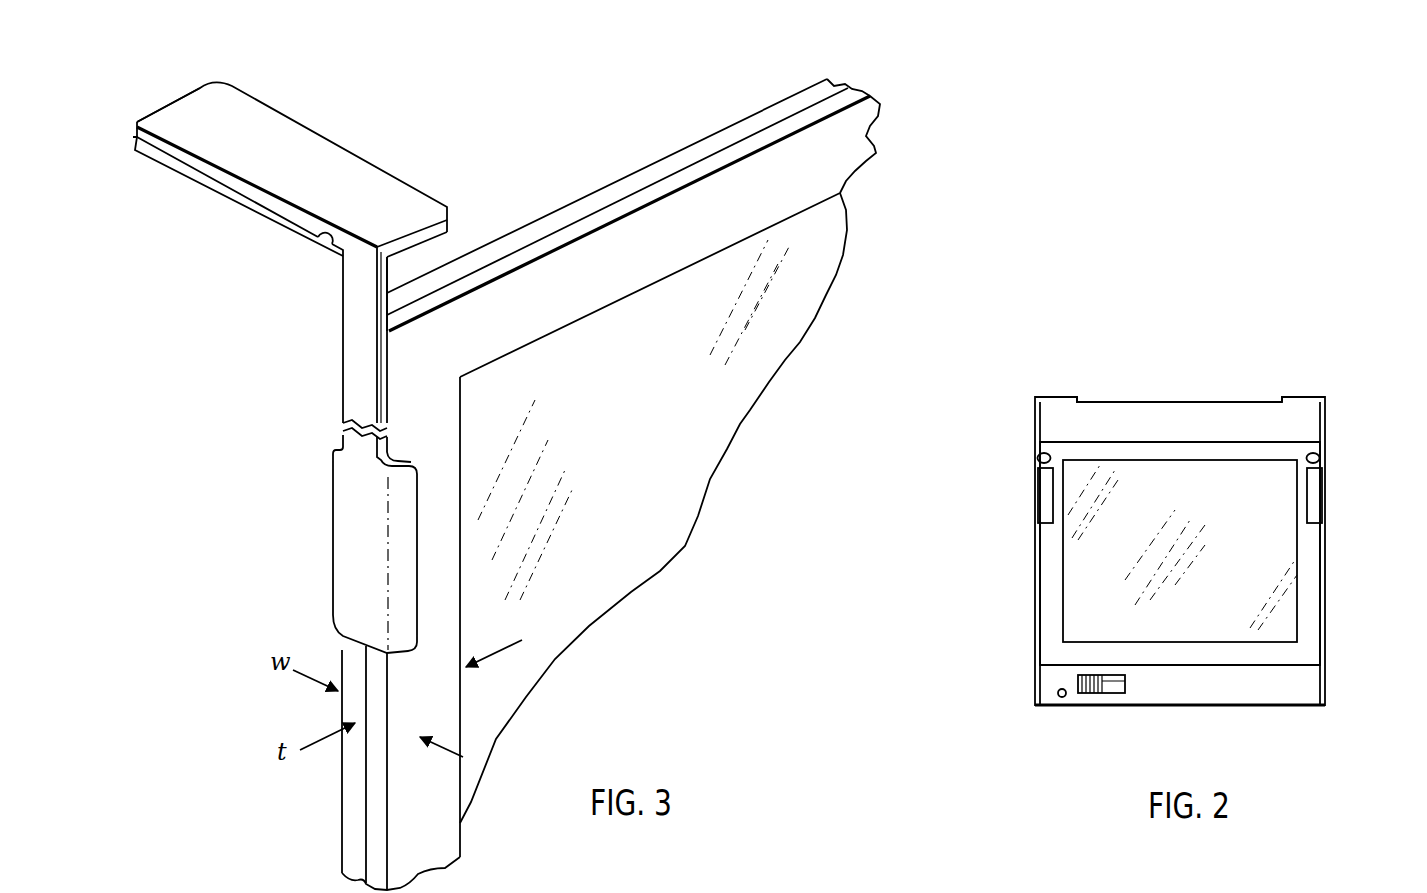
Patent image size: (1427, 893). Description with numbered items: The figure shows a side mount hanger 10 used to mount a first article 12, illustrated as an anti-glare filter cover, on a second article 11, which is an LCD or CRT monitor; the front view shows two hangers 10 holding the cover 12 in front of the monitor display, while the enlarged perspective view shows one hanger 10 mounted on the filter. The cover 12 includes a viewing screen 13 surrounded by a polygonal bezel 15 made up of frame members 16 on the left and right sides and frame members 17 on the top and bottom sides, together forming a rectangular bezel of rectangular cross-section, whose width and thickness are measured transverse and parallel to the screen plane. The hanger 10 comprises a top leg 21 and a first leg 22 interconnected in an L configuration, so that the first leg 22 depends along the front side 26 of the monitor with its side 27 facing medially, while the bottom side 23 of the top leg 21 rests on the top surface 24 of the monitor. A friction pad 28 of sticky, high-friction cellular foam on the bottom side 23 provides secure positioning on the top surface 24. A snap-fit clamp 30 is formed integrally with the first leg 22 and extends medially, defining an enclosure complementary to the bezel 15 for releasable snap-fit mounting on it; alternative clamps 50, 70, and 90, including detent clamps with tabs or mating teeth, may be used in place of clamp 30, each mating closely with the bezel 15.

In FIG. 3, the side mount hanger 10 is at (287, 104).
In FIG. 2, the side mount hanger 10 is at (1030, 393).
In FIG. 2, the second article 11 is at (1205, 398).
In FIG. 3, the first article 12 is at (497, 216).
In FIG. 2, the first article 12 is at (1163, 436).
In FIG. 3, the viewing screen 13 is at (634, 464).
In FIG. 2, the viewing screen 13 is at (1192, 509).
In FIG. 3, the bezel 15 is at (766, 100).
In FIG. 3, the frame members 16 is at (352, 773).
In FIG. 2, the frame members 16 is at (1050, 607).
In FIG. 2, the frame members 17 is at (1238, 450).
In FIG. 3, the top leg 21 is at (135, 113).
In FIG. 3, the first leg 22 is at (346, 406).
In FIG. 3, the bottom side 23 is at (324, 245).
In FIG. 2, the top surface 24 is at (1103, 400).
In FIG. 2, the front side 26 is at (1052, 678).
In FIG. 2, the side 27 is at (1040, 456).
In FIG. 3, the friction pad 28 is at (178, 183).
In FIG. 3, the snap-fit clamp 30 is at (260, 544).
In FIG. 3, the clamp 50 is at (260, 544).
In FIG. 3, the clamp 70 is at (260, 544).
In FIG. 3, the detent clamp 90 is at (352, 549).